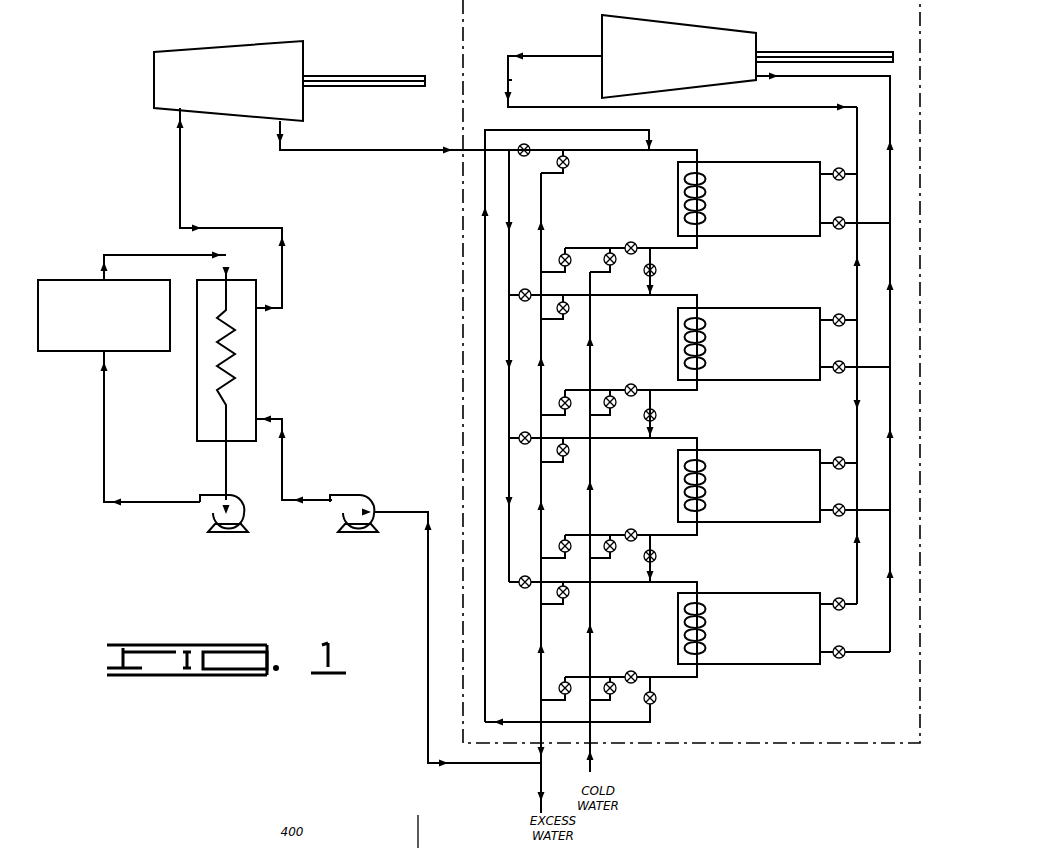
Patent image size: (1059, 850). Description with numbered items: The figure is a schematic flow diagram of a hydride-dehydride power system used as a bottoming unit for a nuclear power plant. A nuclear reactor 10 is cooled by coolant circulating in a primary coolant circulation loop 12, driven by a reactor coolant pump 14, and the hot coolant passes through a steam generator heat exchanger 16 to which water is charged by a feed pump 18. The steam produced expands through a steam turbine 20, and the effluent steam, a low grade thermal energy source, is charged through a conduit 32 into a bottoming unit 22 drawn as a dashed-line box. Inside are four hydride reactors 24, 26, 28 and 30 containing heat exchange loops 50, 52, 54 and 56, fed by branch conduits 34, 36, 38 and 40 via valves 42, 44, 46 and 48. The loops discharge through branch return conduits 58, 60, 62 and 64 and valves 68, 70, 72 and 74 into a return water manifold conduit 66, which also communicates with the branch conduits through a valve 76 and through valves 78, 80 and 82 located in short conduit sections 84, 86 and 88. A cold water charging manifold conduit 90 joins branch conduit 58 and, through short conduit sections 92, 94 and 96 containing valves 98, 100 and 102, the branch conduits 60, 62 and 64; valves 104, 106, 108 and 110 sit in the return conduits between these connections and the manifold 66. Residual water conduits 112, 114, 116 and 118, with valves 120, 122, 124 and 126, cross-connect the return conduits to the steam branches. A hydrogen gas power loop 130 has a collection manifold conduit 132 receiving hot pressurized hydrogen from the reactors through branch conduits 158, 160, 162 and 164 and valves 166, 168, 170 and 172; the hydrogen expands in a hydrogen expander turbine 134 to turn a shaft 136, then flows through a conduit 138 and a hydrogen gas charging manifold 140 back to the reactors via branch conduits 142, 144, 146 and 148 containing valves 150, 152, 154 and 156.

The nuclear reactor 10 is at (122, 353).
The primary coolant circulation loop 12 is at (148, 255).
The reactor coolant pump 14 is at (214, 517).
The steam generator heat exchanger 16 is at (200, 404).
The feed pump 18 is at (346, 515).
The steam turbine 20 is at (276, 41).
The bottoming unit 22 is at (845, 748).
The hydride reactor 24 is at (760, 165).
The hydride reactor 26 is at (752, 310).
The hydride reactor 28 is at (752, 452).
The hydride reactor 30 is at (752, 595).
The conduit 32 is at (408, 150).
The branch conduit 34 is at (640, 152).
The branch conduit 36 is at (646, 307).
The branch conduit 38 is at (640, 450).
The branch conduit 40 is at (642, 592).
The valve 42 is at (528, 143).
The valve 44 is at (525, 302).
The valve 46 is at (525, 445).
The valve 48 is at (522, 590).
The heat exchange loop 50 is at (712, 222).
The heat exchange loop 52 is at (712, 368).
The heat exchange loop 54 is at (712, 512).
The heat exchange loop 56 is at (712, 655).
The branch return conduit 58 is at (660, 248).
The branch return conduit 60 is at (668, 390).
The branch return conduit 62 is at (668, 528).
The branch return conduit 64 is at (668, 672).
The return water manifold conduit 66 is at (428, 636).
The valve 68 is at (618, 250).
The valve 70 is at (628, 392).
The valve 72 is at (630, 530).
The valve 74 is at (630, 674).
The valve 76 is at (572, 162).
The valve 78 is at (572, 310).
The valve 80 is at (572, 450).
The valve 82 is at (572, 592).
The short conduit section 84 is at (541, 336).
The short conduit section 86 is at (546, 466).
The short conduit section 88 is at (546, 608).
The cold water charging manifold conduit 90 is at (592, 768).
The short conduit section 92 is at (592, 425).
The short conduit section 94 is at (592, 568).
The short conduit section 96 is at (592, 712).
The valve 98 is at (628, 408).
The valve 100 is at (630, 551).
The valve 102 is at (630, 695).
The valve 104 is at (558, 252).
The valve 106 is at (558, 396).
The valve 108 is at (558, 540).
The valve 110 is at (558, 680).
The residual water conduit 112 is at (654, 281).
The residual water conduit 114 is at (656, 422).
The residual water conduit 116 is at (656, 570).
The residual water conduit 118 is at (485, 315).
The valve 120 is at (656, 266).
The valve 122 is at (658, 404).
The valve 124 is at (658, 550).
The valve 126 is at (658, 692).
The hydrogen gas power loop 130 is at (580, 50).
The collection manifold conduit 132 is at (890, 412).
The hydrogen expander turbine 134 is at (695, 20).
The shaft 136 is at (840, 50).
The conduit 138 is at (508, 80).
The hydrogen gas charging manifold 140 is at (857, 272).
The branch conduit 142 is at (830, 178).
The branch conduit 144 is at (832, 326).
The branch conduit 146 is at (832, 469).
The branch conduit 148 is at (834, 611).
The valve 150 is at (839, 168).
The valve 152 is at (839, 314).
The valve 154 is at (839, 457).
The valve 156 is at (839, 598).
The branch conduit 158 is at (866, 222).
The branch conduit 160 is at (868, 366).
The branch conduit 162 is at (868, 509).
The branch conduit 164 is at (872, 656).
The valve 166 is at (832, 230).
The valve 168 is at (832, 375).
The valve 170 is at (832, 517).
The valve 172 is at (834, 659).